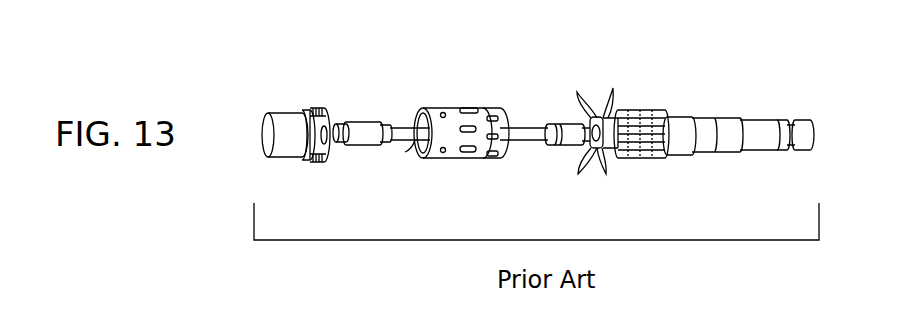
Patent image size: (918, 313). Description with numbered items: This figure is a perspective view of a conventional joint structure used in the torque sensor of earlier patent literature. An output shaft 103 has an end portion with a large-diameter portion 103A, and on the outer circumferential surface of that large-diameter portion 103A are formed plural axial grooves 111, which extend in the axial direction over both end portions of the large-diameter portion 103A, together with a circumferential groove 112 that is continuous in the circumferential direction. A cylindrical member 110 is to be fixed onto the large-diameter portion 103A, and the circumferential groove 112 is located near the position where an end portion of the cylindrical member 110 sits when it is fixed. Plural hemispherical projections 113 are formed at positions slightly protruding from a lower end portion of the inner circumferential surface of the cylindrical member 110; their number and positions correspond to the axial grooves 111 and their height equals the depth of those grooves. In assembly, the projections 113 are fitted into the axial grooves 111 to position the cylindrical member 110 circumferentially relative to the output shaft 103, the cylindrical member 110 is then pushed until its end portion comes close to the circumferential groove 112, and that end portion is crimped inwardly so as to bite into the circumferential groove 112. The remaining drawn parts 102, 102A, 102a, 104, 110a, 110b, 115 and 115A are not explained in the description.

The plug body 102 is at (726, 118).
The plug front end portion 102A is at (606, 118).
The knurled portion 102a is at (645, 118).
The output shaft 103 is at (287, 158).
The large-diameter portion 103A is at (300, 111).
The shaft 104 is at (522, 140).
The cylindrical member 110 is at (451, 108).
The sleeve ring portion 110a is at (486, 122).
The sleeve slots 110b is at (478, 158).
The axial grooves 111 is at (322, 108).
The circumferential groove 112 is at (324, 162).
The hemispherical projections 113 is at (418, 152).
The collar 115 is at (585, 165).
The collar petals 115A is at (578, 114).